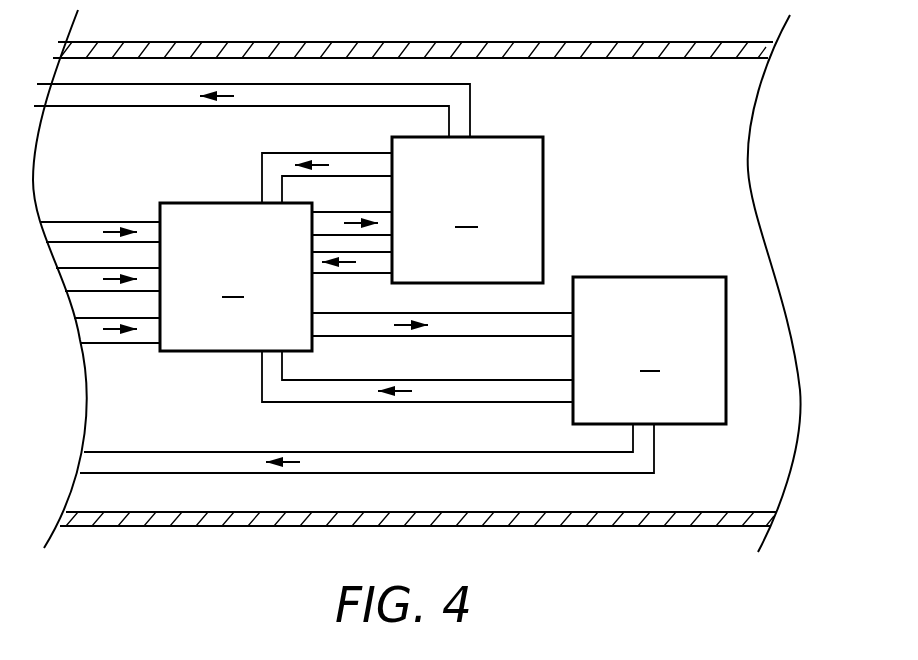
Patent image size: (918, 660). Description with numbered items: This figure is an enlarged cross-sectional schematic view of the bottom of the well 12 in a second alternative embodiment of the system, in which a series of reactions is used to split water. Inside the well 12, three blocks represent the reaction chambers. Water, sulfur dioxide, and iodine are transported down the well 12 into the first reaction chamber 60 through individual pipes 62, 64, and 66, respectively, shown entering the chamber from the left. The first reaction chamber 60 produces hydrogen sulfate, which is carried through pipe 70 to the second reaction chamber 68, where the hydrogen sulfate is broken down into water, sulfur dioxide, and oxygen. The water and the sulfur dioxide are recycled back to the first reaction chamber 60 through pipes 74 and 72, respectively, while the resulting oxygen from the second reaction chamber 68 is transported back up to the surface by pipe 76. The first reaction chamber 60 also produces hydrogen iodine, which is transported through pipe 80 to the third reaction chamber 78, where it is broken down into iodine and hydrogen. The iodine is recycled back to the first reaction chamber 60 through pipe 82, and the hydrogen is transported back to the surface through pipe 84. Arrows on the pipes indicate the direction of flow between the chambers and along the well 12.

The well 12 is at (622, 42).
The first reaction chamber 60 is at (237, 203).
The pipe 62 is at (114, 221).
The pipe 64 is at (87, 292).
The pipe 66 is at (100, 344).
The second reaction chamber 68 is at (543, 213).
The pipe 70 is at (368, 211).
The pipe 72 is at (330, 276).
The pipe 74 is at (298, 153).
The pipe 76 is at (470, 117).
The third reaction chamber 78 is at (726, 378).
The pipe 80 is at (473, 313).
The pipe 82 is at (455, 381).
The pipe 84 is at (435, 474).